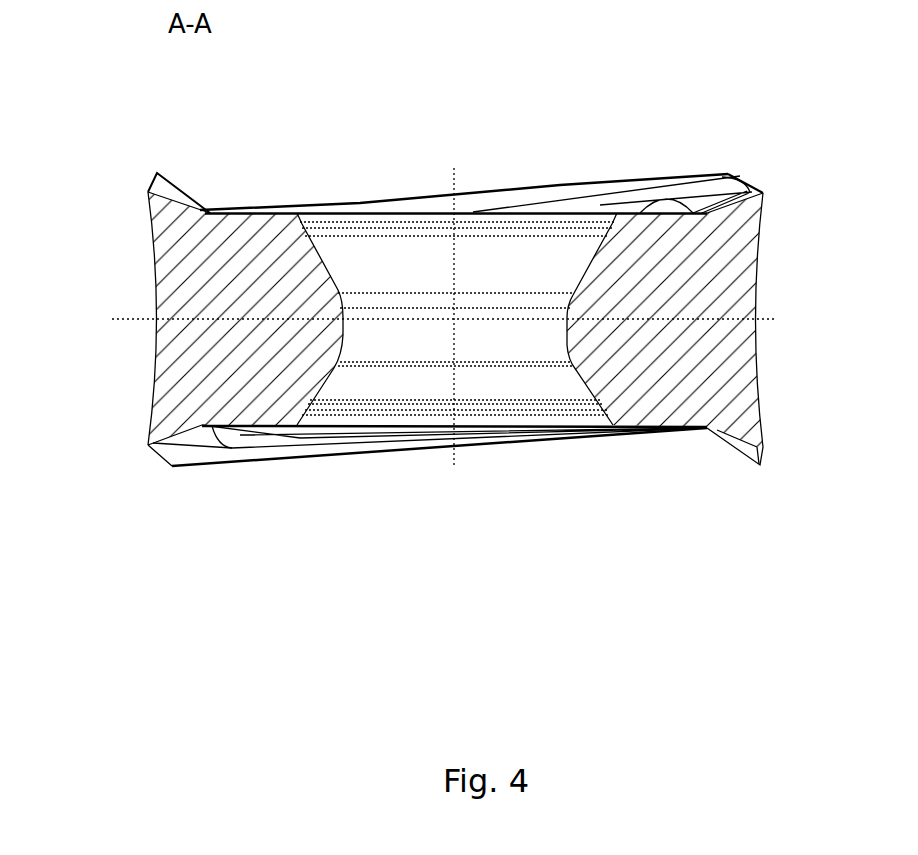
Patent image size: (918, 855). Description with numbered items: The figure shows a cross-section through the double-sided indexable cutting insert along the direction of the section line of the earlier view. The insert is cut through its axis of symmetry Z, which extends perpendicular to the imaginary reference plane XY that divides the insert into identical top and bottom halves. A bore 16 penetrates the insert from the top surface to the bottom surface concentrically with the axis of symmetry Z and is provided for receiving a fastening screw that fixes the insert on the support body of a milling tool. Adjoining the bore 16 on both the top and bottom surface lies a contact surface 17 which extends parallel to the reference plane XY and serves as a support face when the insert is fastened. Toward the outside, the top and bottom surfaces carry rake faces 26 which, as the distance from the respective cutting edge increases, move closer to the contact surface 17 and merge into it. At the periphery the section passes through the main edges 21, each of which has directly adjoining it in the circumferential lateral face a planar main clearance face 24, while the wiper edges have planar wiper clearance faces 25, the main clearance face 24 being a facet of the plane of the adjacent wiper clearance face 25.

The bore 16 is at (476, 374).
The contact surface 17 is at (268, 204).
The main edge 21 is at (756, 184).
The main clearance face 24 is at (774, 199).
The wiper clearance face 25 is at (770, 264).
The rake face 26 is at (536, 188).
The axis of symmetry Z is at (450, 291).
The reference plane XY is at (121, 313).